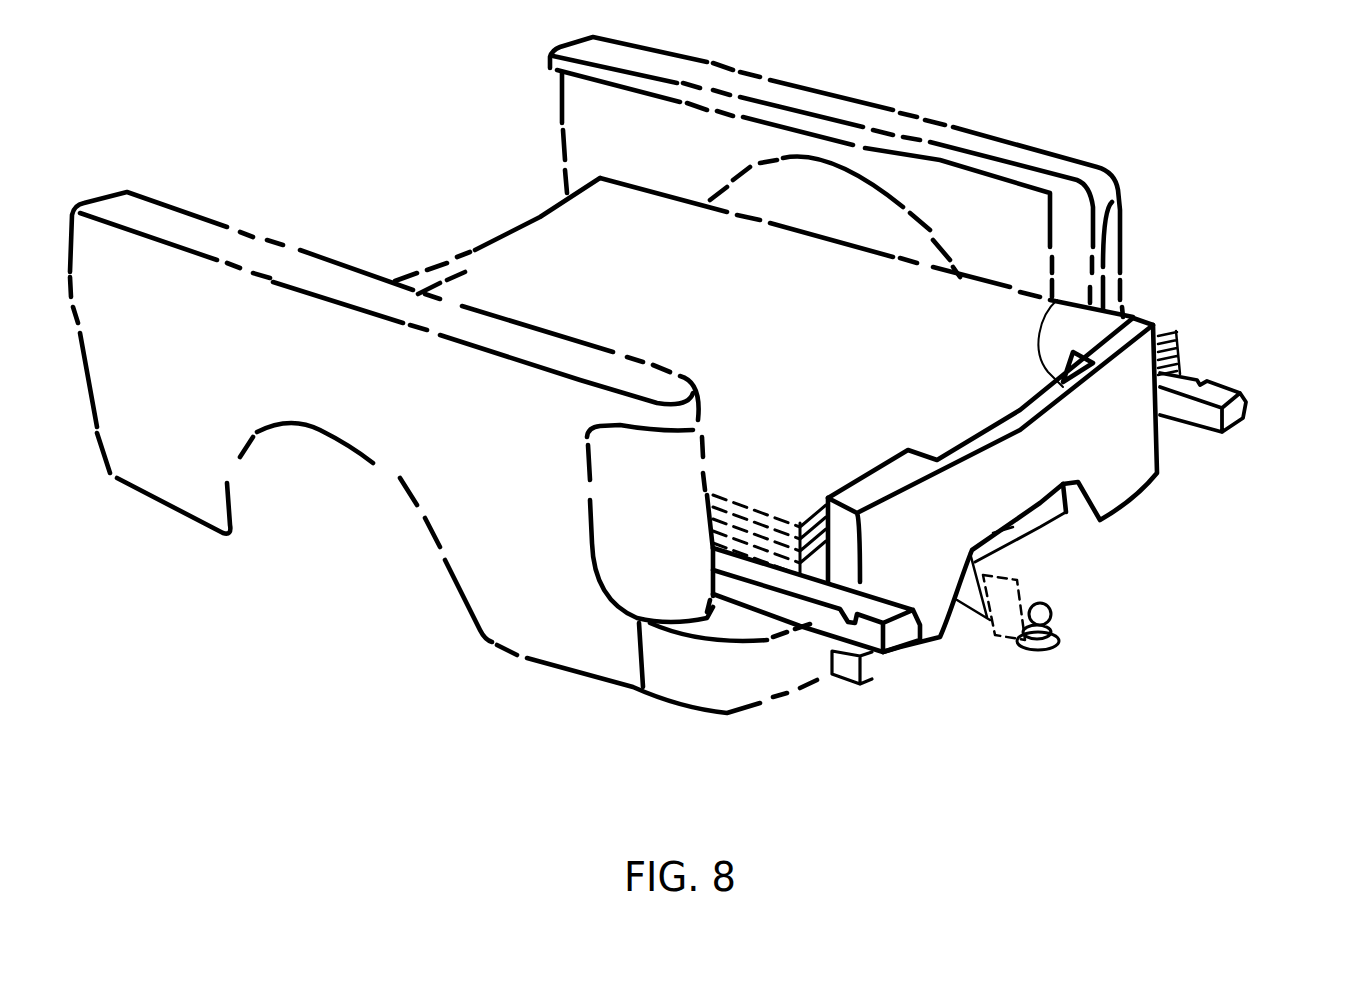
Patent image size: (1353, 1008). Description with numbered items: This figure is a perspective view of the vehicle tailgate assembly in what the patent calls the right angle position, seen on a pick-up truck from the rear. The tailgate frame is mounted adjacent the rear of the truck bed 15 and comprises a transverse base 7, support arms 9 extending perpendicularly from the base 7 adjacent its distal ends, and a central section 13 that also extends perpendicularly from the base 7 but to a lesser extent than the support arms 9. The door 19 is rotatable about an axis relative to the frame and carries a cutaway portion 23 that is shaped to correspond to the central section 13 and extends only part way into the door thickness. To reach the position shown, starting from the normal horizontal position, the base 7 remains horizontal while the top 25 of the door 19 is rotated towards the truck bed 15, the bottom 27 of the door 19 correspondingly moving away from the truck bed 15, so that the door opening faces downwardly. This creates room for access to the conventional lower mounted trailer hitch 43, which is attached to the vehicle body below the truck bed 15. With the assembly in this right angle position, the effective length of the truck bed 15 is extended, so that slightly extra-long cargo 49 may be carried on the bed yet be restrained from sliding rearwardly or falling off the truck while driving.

The transverse base 7 is at (740, 557).
The support arms 9 is at (828, 620).
The central section 13 is at (1047, 550).
The truck bed 15 is at (421, 277).
The door 19 is at (1127, 455).
The cutaway portion 23 is at (1040, 303).
The top of the door 25 is at (1130, 337).
The bottom of the door 27 is at (1123, 509).
The trailer hitch 43 is at (1012, 650).
The extra-long cargo 49 is at (868, 300).